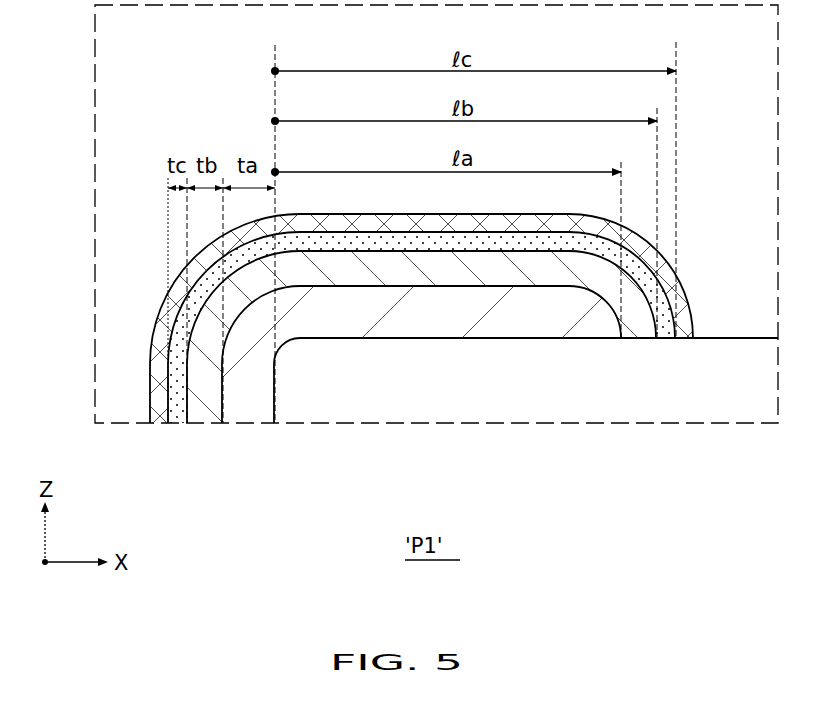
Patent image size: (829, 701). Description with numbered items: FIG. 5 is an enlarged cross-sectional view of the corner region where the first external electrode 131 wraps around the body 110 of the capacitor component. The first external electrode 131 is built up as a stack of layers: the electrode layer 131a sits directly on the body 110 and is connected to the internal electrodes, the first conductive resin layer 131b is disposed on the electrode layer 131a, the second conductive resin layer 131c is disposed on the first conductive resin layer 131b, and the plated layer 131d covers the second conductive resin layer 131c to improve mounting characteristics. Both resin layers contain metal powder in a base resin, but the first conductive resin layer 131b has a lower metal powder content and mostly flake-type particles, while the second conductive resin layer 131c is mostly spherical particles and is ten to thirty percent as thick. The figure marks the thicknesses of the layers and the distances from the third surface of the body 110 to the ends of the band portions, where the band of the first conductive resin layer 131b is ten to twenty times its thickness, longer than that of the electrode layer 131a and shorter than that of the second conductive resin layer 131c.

The body 110 is at (725, 338).
The first external electrode 131 is at (392, 373).
The electrode layer 131a is at (256, 424).
The first conductive resin layer 131b is at (205, 424).
The second conductive resin layer 131c is at (179, 424).
The plated layer 131d is at (315, 492).